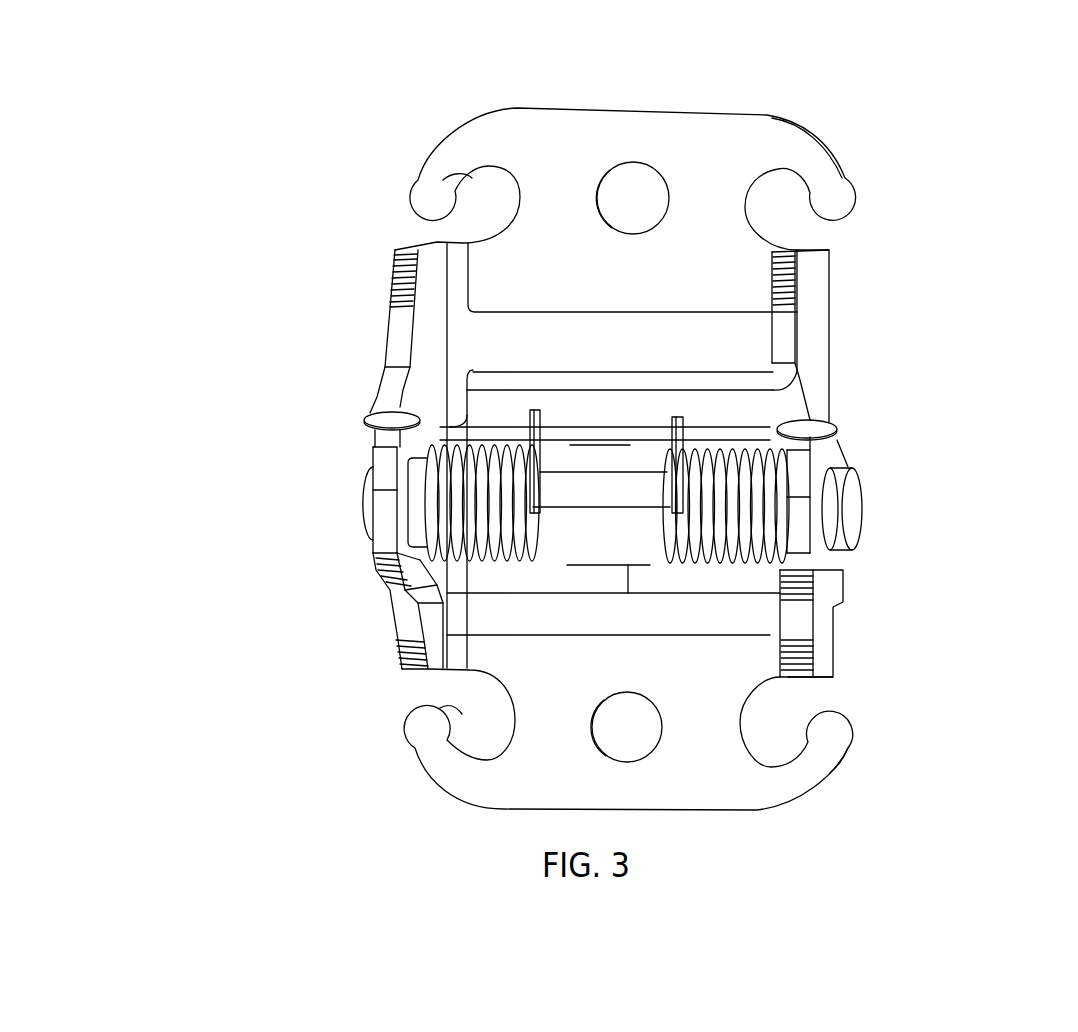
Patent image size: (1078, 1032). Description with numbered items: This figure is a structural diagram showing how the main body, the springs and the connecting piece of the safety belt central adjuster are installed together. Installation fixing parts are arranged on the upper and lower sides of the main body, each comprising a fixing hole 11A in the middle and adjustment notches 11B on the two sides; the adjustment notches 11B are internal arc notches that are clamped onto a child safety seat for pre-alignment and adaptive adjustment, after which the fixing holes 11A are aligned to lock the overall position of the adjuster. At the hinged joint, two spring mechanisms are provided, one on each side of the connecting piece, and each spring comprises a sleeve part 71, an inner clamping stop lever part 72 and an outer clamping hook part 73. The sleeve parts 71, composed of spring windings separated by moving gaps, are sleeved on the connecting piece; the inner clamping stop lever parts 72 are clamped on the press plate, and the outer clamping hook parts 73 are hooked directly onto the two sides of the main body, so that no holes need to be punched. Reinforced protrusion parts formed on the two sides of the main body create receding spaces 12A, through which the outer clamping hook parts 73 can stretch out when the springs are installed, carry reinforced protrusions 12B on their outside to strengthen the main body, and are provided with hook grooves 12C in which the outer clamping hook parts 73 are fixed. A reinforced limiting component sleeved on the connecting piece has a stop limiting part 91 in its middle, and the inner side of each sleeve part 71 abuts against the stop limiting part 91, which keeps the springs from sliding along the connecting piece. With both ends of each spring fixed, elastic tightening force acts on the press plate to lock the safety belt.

The fixing hole 11A is at (613, 195).
The adjustment notch 11B is at (483, 203).
The receding space 12A is at (408, 507).
The reinforced protrusion 12B is at (815, 503).
The hook groove 12C is at (392, 434).
The sleeve part 71 is at (443, 450).
The inner clamping stop lever part 72 is at (528, 430).
The outer clamping hook part 73 is at (375, 419).
The stop limiting part 91 is at (610, 492).